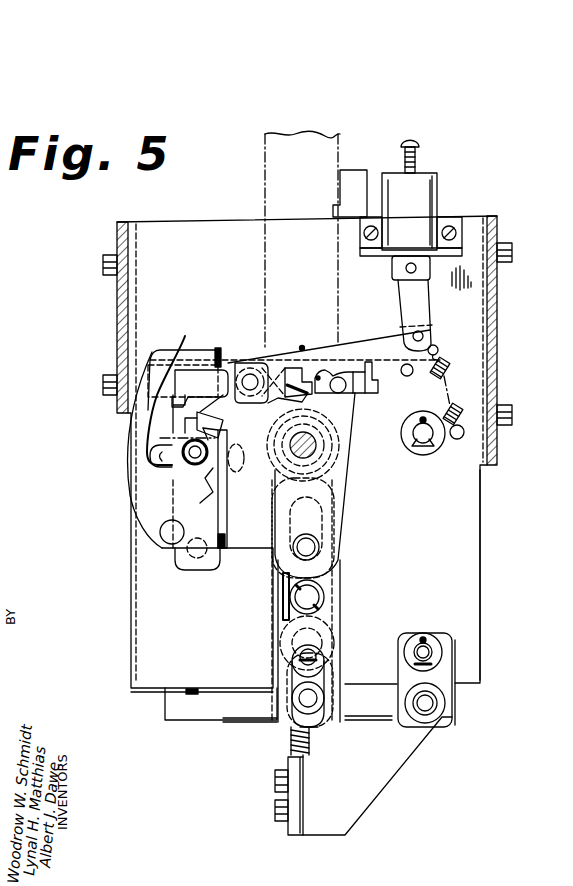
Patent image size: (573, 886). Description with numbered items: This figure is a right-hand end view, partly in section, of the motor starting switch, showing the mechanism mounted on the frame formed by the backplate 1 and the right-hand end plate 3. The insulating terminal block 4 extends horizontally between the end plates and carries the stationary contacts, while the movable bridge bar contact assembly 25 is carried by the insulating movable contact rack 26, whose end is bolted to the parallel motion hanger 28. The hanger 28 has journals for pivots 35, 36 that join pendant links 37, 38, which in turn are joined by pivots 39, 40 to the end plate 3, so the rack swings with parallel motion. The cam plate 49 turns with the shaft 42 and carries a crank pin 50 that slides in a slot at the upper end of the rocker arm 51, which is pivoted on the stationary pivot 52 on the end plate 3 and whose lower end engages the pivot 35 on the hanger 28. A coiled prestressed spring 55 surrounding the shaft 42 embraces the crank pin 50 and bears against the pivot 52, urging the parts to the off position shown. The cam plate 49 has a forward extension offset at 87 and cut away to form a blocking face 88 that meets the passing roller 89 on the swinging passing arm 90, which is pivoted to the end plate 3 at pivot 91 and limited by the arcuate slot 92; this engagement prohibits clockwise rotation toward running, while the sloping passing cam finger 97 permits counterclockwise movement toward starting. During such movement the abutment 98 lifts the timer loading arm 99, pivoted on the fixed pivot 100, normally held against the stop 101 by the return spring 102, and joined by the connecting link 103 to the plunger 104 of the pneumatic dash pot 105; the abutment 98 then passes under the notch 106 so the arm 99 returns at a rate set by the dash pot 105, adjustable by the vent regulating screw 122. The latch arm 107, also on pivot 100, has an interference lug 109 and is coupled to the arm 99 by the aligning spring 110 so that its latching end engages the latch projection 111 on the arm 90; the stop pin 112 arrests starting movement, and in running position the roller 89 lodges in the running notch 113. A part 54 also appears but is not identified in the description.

The backplate 1 is at (495, 367).
The right-hand end plate 3 is at (470, 575).
The stationary contact and terminal mounting block 4 is at (185, 726).
The movable bridge bar contact assembly 25 is at (262, 724).
The movable contact rack 26 is at (296, 833).
The parallel motion hanger 28 is at (358, 793).
The pivot 35 is at (300, 700).
The pivot 36 is at (430, 710).
The pendant link 37 is at (304, 660).
The pendant link 38 is at (460, 676).
The pivot 39 is at (315, 652).
The pivot 40 is at (426, 648).
The shaft 42 is at (315, 455).
The cam plate 49 is at (360, 433).
The crank pin 50 is at (335, 558).
The rocker arm 51 is at (342, 585).
The stationary pivot 52 is at (324, 597).
The bolt 54 is at (322, 673).
The coiled prestressed spring 55 is at (282, 588).
The offset 87 is at (222, 350).
The blocking face 88 is at (168, 470).
The passing roller 89 is at (172, 462).
The swinging passing arm 90 is at (175, 428).
The pivot 91 is at (190, 562).
The arcuate slot 92 is at (170, 443).
The passing cam finger 97 is at (224, 420).
The time latch actuating abutment 98 is at (339, 377).
The timer loading arm 99 is at (318, 376).
The fixed pivot 100 is at (250, 375).
The stop 101 is at (406, 376).
The return spring 102 is at (445, 362).
The connecting link 103 is at (420, 298).
The plunger 104 is at (360, 255).
The pneumatic dash pot 105 is at (432, 197).
The notch 106 is at (302, 346).
The latch arm 107 is at (185, 336).
The interference lug 109 is at (295, 374).
The aligning spring 110 is at (288, 366).
The latch projection 111 is at (188, 386).
The stop pin 112 is at (228, 480).
The running notch 113 is at (195, 466).
The vent regulating screw 122 is at (414, 152).